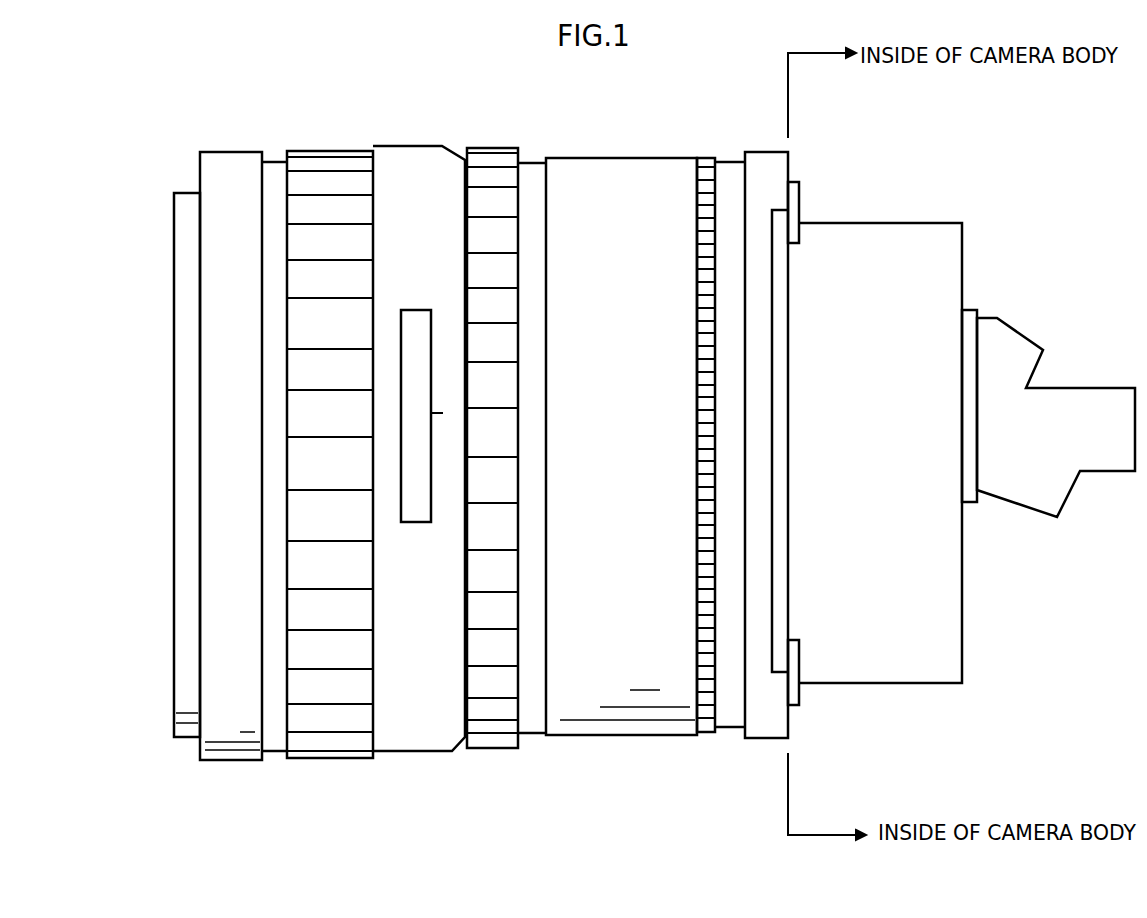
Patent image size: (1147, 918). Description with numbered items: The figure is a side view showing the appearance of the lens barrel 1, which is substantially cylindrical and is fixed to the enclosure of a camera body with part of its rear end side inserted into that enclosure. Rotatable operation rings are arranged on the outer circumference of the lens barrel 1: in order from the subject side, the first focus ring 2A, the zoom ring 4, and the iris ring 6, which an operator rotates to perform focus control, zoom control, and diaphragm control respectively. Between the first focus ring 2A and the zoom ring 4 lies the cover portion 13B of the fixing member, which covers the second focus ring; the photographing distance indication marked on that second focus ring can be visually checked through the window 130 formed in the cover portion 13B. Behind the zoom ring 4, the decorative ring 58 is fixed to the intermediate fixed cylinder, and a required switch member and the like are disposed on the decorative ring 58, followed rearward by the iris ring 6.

The lens barrel 1 is at (83, 148).
The first focus ring 2A is at (331, 153).
The cover portion 13B is at (419, 421).
The window 130 is at (419, 522).
The zoom ring 4 is at (492, 148).
The decorative ring 58 is at (619, 158).
The iris ring 6 is at (703, 158).